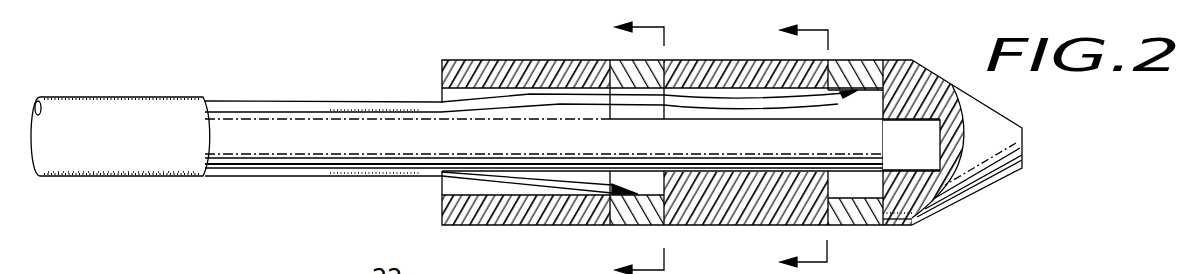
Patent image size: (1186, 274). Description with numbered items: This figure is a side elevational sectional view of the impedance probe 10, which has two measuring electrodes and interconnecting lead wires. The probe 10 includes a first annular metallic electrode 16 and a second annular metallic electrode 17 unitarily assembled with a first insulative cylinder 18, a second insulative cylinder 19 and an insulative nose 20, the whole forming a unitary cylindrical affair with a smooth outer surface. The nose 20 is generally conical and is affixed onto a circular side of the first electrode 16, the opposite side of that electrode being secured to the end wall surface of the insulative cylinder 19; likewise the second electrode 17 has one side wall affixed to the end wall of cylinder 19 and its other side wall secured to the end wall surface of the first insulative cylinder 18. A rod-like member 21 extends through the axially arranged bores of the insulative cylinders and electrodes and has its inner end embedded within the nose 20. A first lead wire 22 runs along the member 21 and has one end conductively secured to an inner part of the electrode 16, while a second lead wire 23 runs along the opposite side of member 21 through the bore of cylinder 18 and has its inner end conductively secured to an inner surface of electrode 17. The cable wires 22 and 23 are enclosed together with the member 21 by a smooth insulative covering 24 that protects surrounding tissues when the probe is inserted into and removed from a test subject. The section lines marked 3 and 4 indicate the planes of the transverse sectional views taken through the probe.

The probe 10 is at (1040, 117).
The first annular metallic electrode 16 is at (873, 63).
The second annular metallic electrode 17 is at (630, 65).
The first insulative cylinder 18 is at (477, 70).
The second insulative cylinder 19 is at (745, 212).
The insulative nose 20 is at (957, 187).
The rod-like member 21 is at (267, 123).
The first lead wire 22 is at (352, 108).
The second lead wire 23 is at (284, 173).
The insulative covering 24 is at (99, 97).
The section line 3- 3 is at (656, 142).
The section line 4- 4 is at (818, 142).